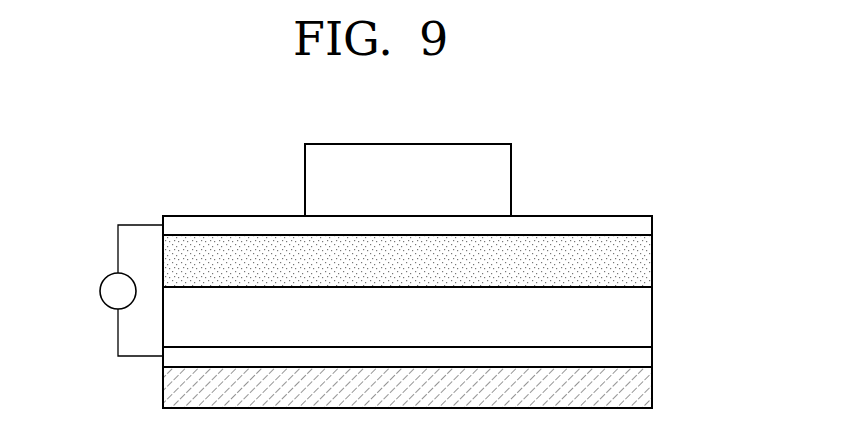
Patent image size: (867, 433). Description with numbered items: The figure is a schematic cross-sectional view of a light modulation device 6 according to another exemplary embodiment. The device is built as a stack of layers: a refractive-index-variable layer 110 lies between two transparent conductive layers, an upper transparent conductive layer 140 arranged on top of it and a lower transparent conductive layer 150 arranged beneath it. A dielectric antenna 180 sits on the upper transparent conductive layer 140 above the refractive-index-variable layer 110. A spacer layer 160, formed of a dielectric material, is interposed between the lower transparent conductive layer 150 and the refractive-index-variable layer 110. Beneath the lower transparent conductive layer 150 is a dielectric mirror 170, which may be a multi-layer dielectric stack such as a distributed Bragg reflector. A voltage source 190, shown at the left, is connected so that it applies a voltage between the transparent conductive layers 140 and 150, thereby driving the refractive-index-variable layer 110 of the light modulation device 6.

The light modulation device 6 is at (663, 148).
The refractive-index-variable layer 110 is at (652, 262).
The transparent conductive layer 140 is at (652, 226).
The transparent conductive layer 150 is at (652, 357).
The spacer layer 160 is at (652, 315).
The dielectric mirror 170 is at (652, 387).
The dielectric antenna 180 is at (511, 173).
The voltage source 190 is at (100, 291).